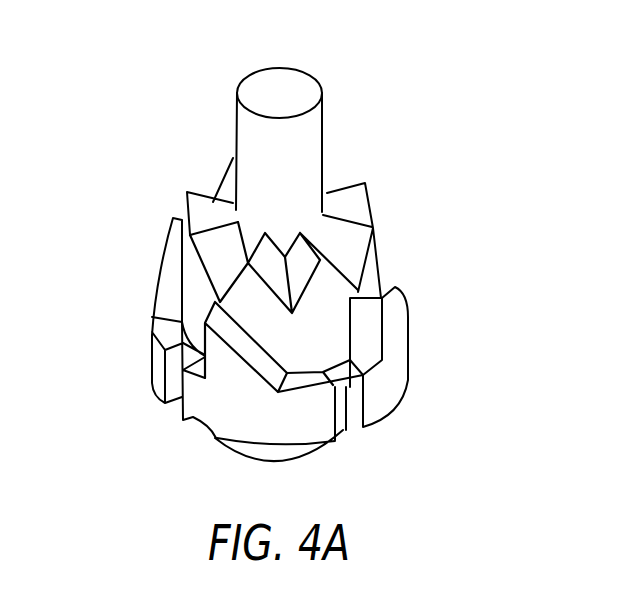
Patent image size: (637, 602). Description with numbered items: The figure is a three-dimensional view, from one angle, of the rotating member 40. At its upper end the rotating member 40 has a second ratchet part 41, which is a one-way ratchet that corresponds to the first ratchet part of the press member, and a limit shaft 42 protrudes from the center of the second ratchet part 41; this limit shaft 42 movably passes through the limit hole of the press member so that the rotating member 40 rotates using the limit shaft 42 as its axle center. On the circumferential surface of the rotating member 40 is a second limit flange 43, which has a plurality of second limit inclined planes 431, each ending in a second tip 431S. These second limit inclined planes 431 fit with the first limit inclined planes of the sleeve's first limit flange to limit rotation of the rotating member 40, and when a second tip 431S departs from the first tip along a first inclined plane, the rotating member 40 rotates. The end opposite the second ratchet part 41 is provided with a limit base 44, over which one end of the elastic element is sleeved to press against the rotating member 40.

The rotating member 40 is at (83, 29).
The second ratchet part 41 is at (352, 242).
The limit shaft 42 is at (307, 138).
The second limit flange 43 is at (398, 338).
The second limit inclined plane 431 is at (168, 265).
The second tip 431S is at (197, 310).
The limit base 44 is at (297, 452).